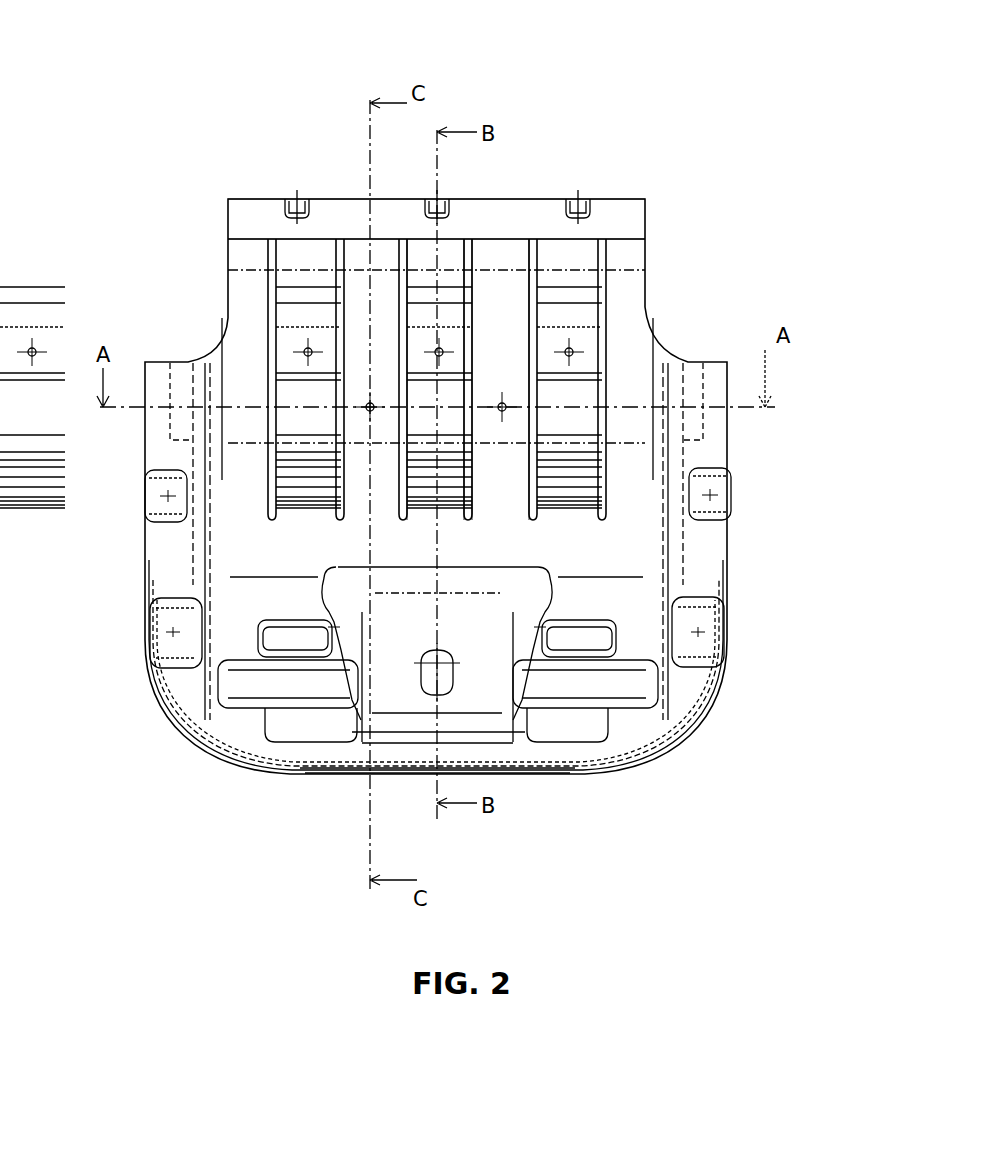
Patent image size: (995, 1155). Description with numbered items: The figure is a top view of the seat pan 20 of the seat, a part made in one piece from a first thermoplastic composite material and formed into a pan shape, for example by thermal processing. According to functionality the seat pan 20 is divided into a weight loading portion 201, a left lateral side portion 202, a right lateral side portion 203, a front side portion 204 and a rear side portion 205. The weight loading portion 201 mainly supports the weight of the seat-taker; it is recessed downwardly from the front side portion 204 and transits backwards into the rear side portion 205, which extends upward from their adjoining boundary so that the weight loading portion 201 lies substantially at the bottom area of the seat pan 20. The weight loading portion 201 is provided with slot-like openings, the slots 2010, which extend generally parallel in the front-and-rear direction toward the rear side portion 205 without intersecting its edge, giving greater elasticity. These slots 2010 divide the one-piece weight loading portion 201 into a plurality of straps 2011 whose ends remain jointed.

The seat pan 20 is at (82, 87).
The weight loading portion 201 is at (492, 382).
The slot 2010 is at (270, 256).
The strap 2011 is at (450, 280).
The left lateral side portion 202 is at (713, 552).
The right lateral side portion 203 is at (158, 548).
The front side portion 204 is at (407, 702).
The rear side portion 205 is at (380, 222).